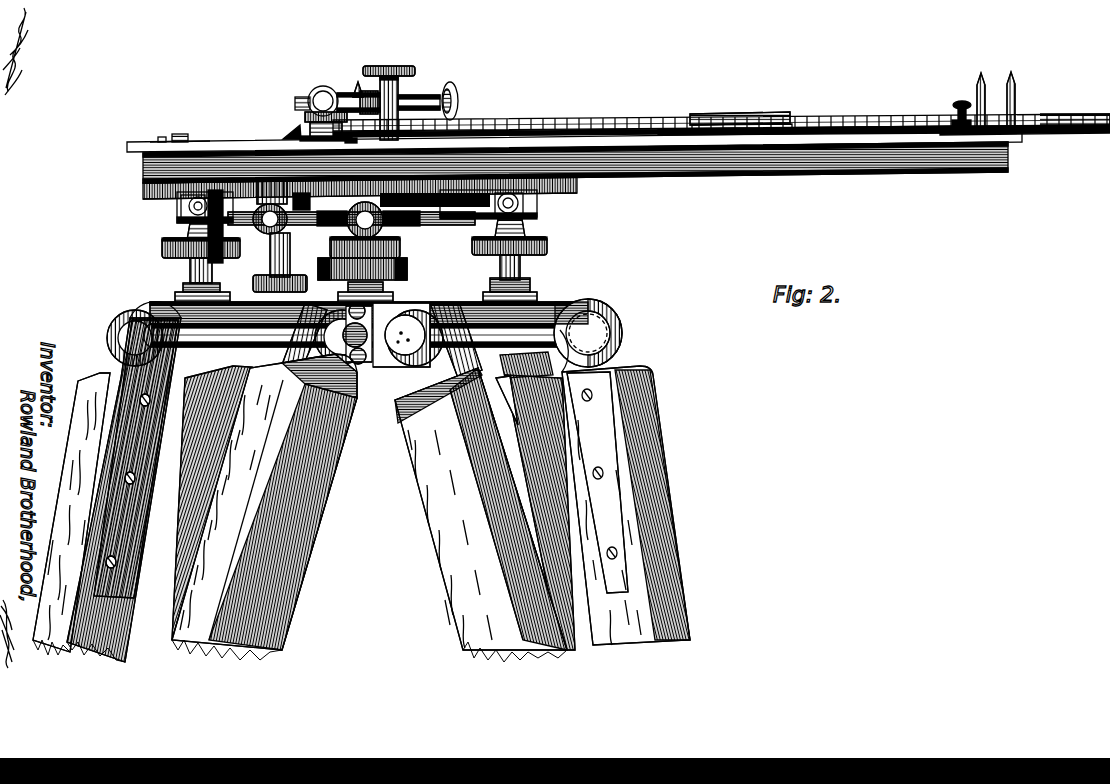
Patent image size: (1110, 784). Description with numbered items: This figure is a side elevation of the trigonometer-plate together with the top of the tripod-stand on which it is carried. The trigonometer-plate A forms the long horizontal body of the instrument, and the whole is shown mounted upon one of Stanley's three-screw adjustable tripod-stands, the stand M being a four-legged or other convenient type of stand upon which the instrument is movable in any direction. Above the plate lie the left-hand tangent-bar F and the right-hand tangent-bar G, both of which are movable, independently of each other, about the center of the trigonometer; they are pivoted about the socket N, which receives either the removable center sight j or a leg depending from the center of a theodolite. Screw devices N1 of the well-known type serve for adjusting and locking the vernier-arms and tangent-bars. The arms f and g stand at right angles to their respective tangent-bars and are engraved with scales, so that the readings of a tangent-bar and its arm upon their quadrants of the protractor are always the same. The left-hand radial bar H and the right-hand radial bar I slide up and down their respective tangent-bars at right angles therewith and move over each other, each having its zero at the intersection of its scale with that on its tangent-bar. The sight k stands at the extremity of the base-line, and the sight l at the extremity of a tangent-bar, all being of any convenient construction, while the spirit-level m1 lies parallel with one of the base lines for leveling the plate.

The trigonometer-plate A is at (140, 146).
The spirit-level m1 is at (203, 137).
The arm f is at (292, 131).
The arm g is at (351, 144).
The socket N is at (346, 95).
The removable center sight j is at (356, 84).
The screw device N1 is at (409, 74).
The left-hand tangent-bar F is at (557, 120).
The right-hand tangent-bar G is at (879, 119).
The left-hand radial bar H is at (1072, 119).
The right-hand radial bar I is at (1091, 137).
The sight l is at (982, 85).
The sight at the extremity of the base-line k is at (1014, 85).
The stand M is at (551, 302).